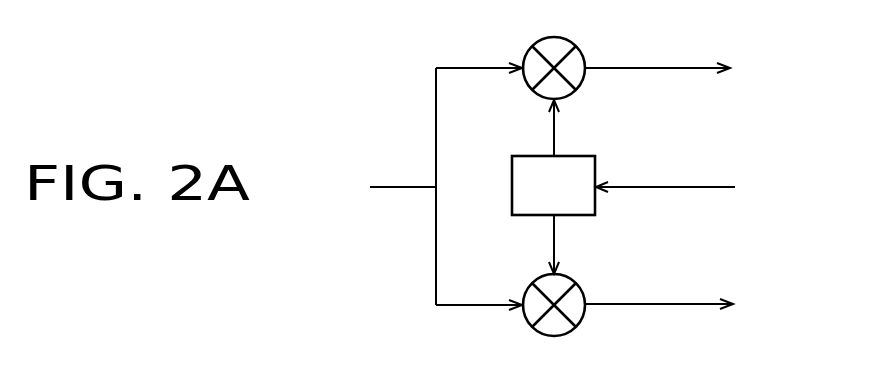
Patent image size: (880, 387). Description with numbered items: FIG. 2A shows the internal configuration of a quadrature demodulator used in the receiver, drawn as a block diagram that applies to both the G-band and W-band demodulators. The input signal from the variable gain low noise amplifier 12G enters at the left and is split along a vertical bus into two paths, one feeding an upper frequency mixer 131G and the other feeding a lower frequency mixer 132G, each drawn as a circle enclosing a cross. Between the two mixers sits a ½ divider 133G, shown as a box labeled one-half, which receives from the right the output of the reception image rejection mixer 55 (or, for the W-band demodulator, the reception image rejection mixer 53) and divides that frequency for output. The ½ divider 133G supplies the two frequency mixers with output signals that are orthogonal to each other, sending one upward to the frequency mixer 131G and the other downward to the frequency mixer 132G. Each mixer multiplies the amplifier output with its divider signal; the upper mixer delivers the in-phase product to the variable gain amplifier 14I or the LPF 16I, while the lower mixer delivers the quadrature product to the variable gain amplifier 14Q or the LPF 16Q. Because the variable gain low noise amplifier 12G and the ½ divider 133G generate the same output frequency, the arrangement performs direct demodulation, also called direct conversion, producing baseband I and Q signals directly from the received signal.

The variable gain low noise amplifier 12G is at (399, 186).
The frequency mixer 131G is at (581, 44).
The frequency mixer 132G is at (585, 331).
The ½ divider 133G is at (568, 155).
The reception image rejection mixer 55 is at (713, 187).
The reception image rejection mixer 53 is at (713, 187).
The variable gain amplifier 14I is at (714, 67).
The LPF 16I is at (714, 67).
The variable gain amplifier 14Q is at (723, 298).
The LPF 16Q is at (723, 298).